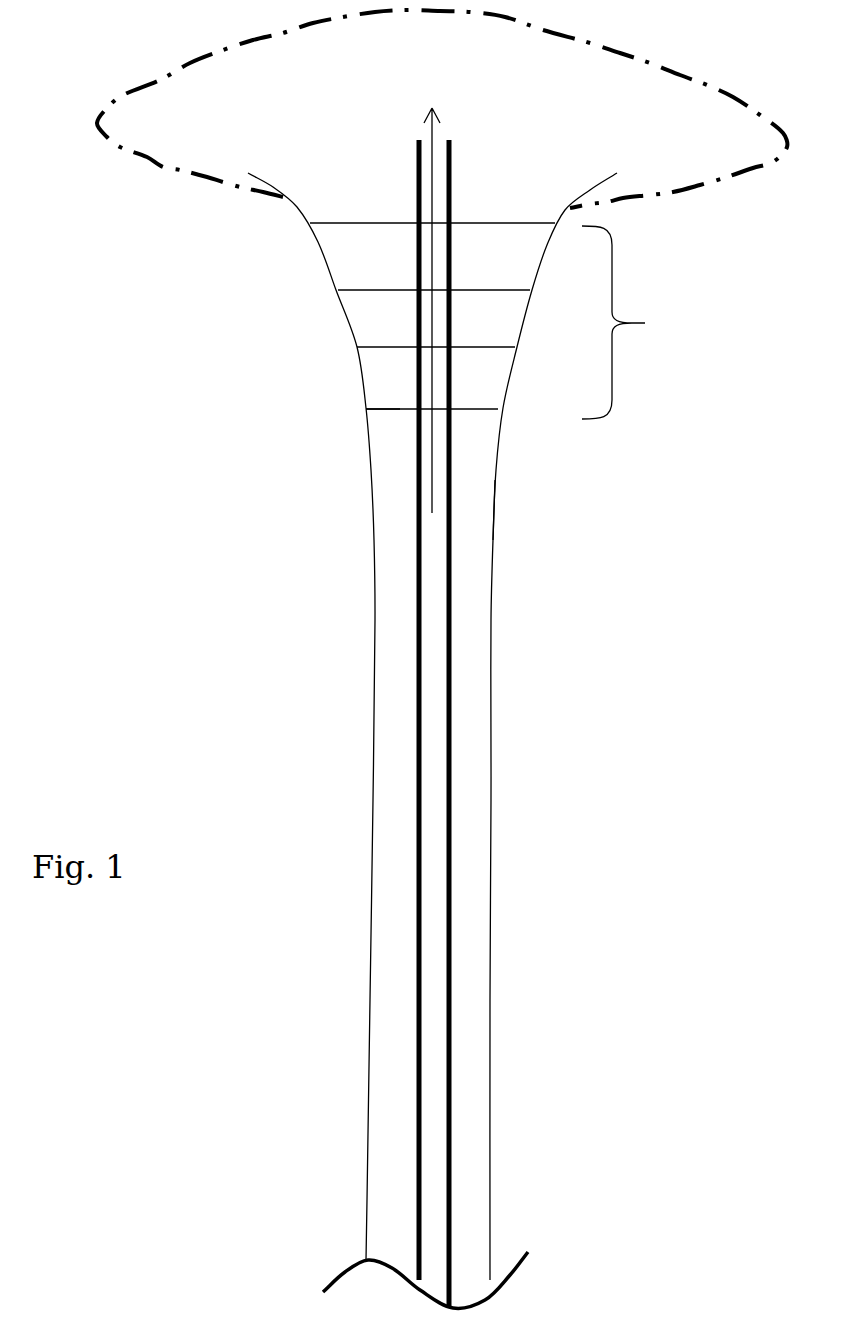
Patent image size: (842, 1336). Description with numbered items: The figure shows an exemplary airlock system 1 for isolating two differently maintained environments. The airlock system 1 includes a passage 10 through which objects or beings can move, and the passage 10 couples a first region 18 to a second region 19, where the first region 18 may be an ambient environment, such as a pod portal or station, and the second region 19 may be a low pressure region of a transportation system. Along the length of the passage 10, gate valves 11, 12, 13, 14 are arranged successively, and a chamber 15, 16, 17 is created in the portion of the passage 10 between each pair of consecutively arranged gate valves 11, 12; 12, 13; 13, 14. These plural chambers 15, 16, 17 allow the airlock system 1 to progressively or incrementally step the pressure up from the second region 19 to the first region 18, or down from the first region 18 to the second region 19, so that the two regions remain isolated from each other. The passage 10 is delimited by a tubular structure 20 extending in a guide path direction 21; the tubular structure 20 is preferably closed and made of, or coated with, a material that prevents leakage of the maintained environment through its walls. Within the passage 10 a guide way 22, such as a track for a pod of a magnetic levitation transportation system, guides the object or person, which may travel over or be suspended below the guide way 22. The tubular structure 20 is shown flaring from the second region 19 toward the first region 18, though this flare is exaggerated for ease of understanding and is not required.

The airlock system 1 is at (170, 462).
The passage 10 is at (638, 322).
The gate valve 11 is at (355, 223).
The gate valve 12 is at (375, 290).
The gate valve 13 is at (375, 347).
The gate valve 14 is at (390, 408).
The chamber 15 is at (357, 260).
The chamber 16 is at (500, 318).
The chamber 17 is at (470, 395).
The first region 18 is at (290, 110).
The second region 19 is at (470, 630).
The tubular structure 20 is at (491, 710).
The guide path direction 21 is at (435, 258).
The guide way 22 is at (432, 790).